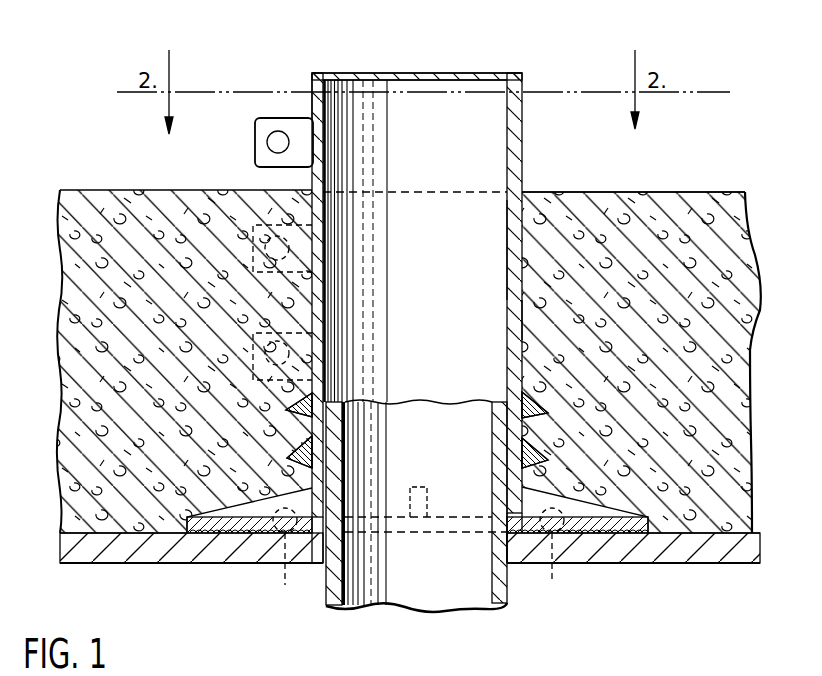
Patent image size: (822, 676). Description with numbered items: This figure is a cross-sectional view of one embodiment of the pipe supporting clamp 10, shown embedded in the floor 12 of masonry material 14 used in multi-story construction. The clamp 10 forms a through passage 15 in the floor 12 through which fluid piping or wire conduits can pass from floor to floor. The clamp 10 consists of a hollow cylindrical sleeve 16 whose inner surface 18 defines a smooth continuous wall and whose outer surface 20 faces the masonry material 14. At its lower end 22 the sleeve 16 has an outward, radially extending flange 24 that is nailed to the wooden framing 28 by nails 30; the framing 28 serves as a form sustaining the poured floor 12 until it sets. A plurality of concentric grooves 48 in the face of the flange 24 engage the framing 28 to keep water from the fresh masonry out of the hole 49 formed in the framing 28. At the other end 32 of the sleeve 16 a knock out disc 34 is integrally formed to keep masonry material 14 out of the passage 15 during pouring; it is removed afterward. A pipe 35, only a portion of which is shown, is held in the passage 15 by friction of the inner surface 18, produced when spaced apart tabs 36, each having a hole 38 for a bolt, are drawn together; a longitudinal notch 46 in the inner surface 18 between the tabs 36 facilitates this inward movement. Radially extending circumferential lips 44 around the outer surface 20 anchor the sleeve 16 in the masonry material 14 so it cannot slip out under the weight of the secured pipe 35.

The pipe supporting clamp 10 is at (530, 75).
The floor 12 is at (590, 190).
The masonry material 14 is at (705, 265).
The passage 15 is at (446, 142).
The sleeve 16 is at (512, 135).
The inner surface 18 is at (507, 250).
The outer surface 20 is at (521, 320).
The end 22 is at (495, 517).
The flange 24 is at (248, 540).
The wooden framing 28 is at (682, 545).
The nails 30 is at (288, 565).
The other end 32 is at (313, 82).
The knock out disc 34 is at (408, 73).
The pipe 35 is at (478, 608).
The tabs 36 is at (258, 138).
The hole 38 is at (272, 150).
The circumferential lips 44 is at (520, 400).
The notch 46 is at (335, 300).
The concentric grooves 48 is at (612, 540).
The hole 49 is at (505, 565).